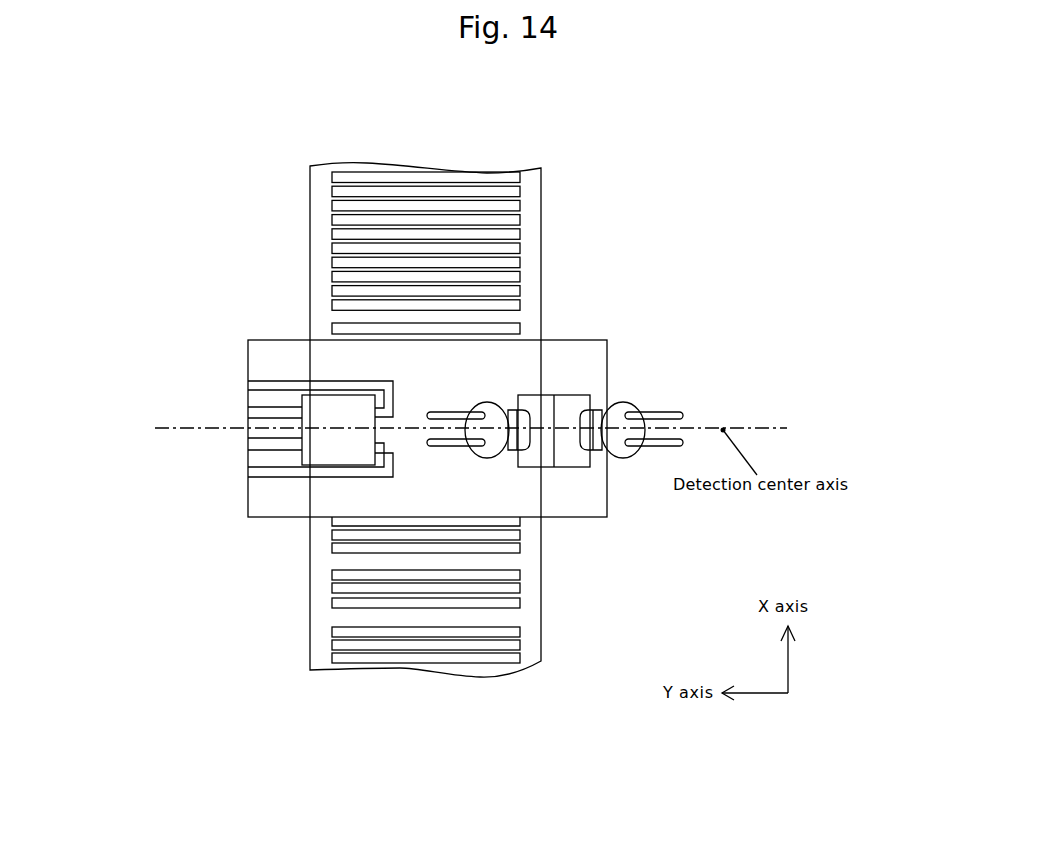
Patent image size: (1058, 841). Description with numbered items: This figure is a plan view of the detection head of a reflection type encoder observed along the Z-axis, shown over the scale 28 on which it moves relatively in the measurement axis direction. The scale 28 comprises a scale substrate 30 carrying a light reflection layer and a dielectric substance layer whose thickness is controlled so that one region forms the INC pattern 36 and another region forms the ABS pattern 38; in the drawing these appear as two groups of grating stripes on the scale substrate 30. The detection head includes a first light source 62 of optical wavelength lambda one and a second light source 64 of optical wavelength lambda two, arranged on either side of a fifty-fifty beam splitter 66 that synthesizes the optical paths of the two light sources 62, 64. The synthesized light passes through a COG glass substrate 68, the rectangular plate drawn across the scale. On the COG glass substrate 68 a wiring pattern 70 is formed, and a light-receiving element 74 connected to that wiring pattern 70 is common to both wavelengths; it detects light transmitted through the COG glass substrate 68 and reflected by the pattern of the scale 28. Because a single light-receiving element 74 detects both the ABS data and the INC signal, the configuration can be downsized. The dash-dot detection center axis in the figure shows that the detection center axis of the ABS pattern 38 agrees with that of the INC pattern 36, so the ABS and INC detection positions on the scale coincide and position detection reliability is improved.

The scale 28 is at (473, 452).
The scale substrate 30 is at (537, 658).
The INC pattern 36 is at (333, 587).
The ABS pattern 38 is at (337, 258).
The first light source 62 is at (482, 430).
The second light source 64 is at (630, 425).
The 50:50 beam splitter 66 is at (575, 457).
The COG glass substrate 68 is at (593, 500).
The wiring pattern 70 is at (262, 387).
The light-receiving element 74 is at (322, 404).